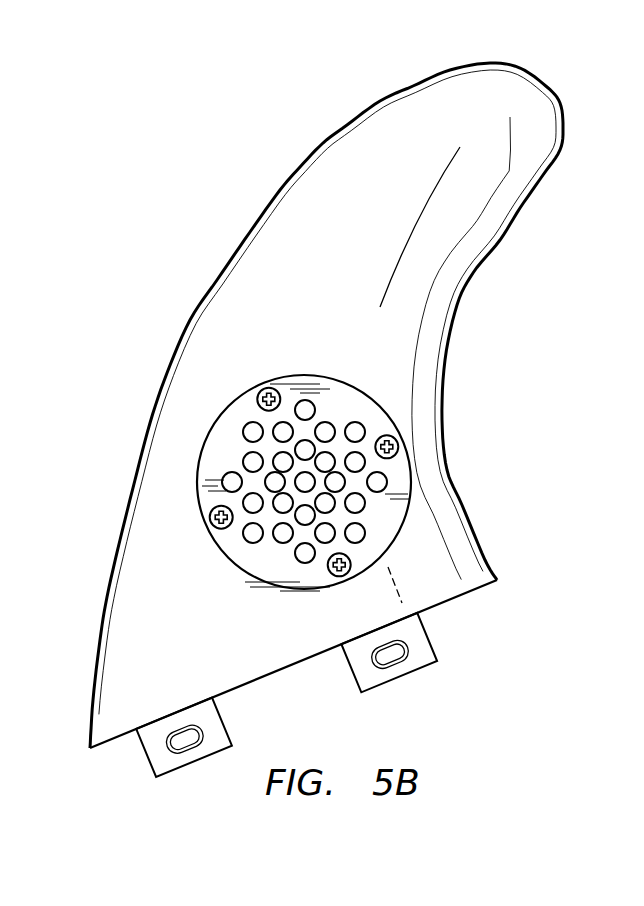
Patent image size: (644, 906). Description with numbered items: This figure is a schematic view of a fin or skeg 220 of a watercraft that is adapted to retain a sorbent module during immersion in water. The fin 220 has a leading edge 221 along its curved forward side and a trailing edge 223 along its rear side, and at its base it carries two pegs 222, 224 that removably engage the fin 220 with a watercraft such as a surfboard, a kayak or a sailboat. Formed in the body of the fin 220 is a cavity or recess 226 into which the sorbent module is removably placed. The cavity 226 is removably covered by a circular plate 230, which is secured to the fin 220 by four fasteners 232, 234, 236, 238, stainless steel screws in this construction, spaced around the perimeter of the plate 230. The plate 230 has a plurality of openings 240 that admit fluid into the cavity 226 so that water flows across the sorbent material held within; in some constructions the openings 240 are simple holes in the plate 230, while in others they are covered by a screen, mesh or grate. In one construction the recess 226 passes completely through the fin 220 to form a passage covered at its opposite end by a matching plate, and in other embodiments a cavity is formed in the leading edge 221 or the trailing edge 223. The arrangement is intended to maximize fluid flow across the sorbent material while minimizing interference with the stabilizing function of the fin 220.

The fin 220 is at (355, 85).
The leading edge 221 is at (289, 165).
The peg 222 is at (434, 638).
The trailing edge 223 is at (488, 260).
The peg 224 is at (138, 752).
The cavity 226 is at (215, 450).
The plate 230 is at (380, 395).
The fastener 232 is at (399, 447).
The fastener 234 is at (336, 577).
The fastener 236 is at (218, 529).
The fastener 238 is at (259, 388).
The openings 240 is at (313, 397).